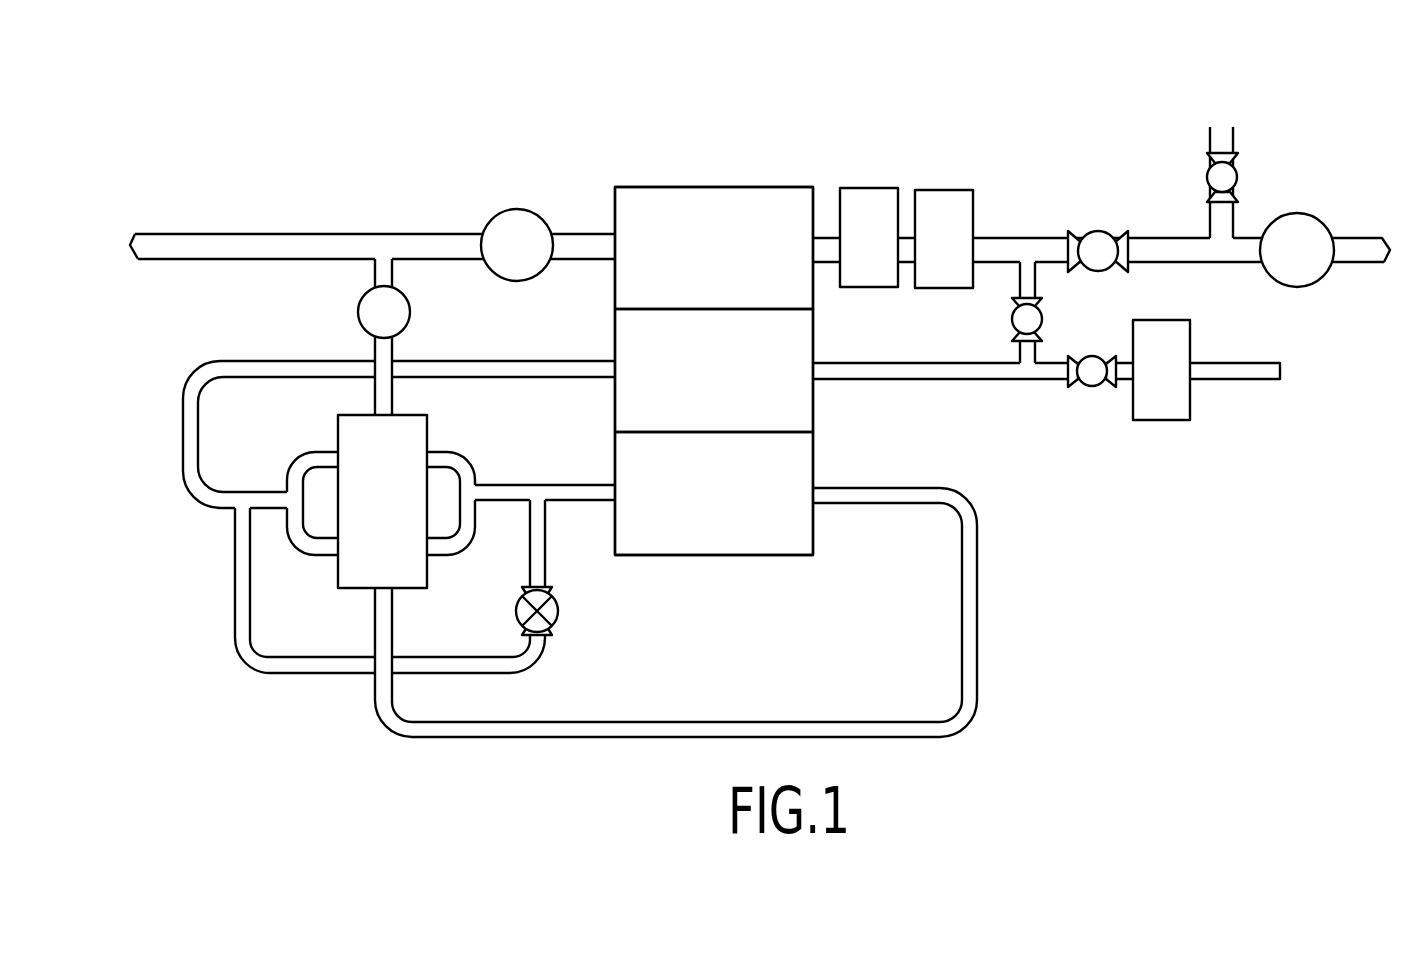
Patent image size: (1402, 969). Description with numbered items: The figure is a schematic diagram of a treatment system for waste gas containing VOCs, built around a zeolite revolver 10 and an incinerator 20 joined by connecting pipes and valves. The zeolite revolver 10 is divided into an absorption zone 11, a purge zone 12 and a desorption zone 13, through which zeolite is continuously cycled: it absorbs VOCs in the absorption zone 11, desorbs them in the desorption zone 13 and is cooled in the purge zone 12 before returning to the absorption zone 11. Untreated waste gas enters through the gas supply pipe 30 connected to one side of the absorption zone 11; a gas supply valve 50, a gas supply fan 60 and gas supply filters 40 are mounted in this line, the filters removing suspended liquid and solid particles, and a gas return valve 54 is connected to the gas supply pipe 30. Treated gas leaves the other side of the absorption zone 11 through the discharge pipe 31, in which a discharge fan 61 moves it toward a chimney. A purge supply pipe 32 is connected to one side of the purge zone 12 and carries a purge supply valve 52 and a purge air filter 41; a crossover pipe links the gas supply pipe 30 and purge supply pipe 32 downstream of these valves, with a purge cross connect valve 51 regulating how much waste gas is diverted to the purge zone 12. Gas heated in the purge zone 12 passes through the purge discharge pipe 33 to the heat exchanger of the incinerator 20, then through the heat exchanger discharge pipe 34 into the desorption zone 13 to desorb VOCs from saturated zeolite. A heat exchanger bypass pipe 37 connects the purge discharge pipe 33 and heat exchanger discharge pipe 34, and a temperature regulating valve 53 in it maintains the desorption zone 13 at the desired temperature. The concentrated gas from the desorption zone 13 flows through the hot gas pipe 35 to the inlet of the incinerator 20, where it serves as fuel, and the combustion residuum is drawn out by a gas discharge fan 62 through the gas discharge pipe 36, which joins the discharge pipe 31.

The zeolite revolver 10 is at (752, 185).
The absorption zone 11 is at (668, 205).
The purge zone 12 is at (802, 390).
The desorption zone 13 is at (717, 533).
The incinerator 20 is at (410, 440).
The gas supply pipe 30 is at (1025, 237).
The discharge pipe 31 is at (332, 231).
The purge supply pipe 32 is at (952, 380).
The purge discharge pipe 33 is at (545, 366).
The heat exchanger discharge pipe 34 is at (503, 485).
The hot gas pipe 35 is at (972, 603).
The gas discharge pipe 36 is at (393, 353).
The heat exchanger bypass pipe 37 is at (530, 523).
The gas supply filter 40 is at (873, 186).
The purge air filter 41 is at (1193, 342).
The gas supply valve 50 is at (1105, 229).
The purge cross connect valve 51 is at (1045, 318).
The purge supply valve 52 is at (1090, 390).
The temperature regulating valve 53 is at (560, 608).
The gas return valve 54 is at (1240, 174).
The gas supply fan 60 is at (1320, 218).
The discharge fan 61 is at (525, 206).
The gas discharge fan 62 is at (358, 320).